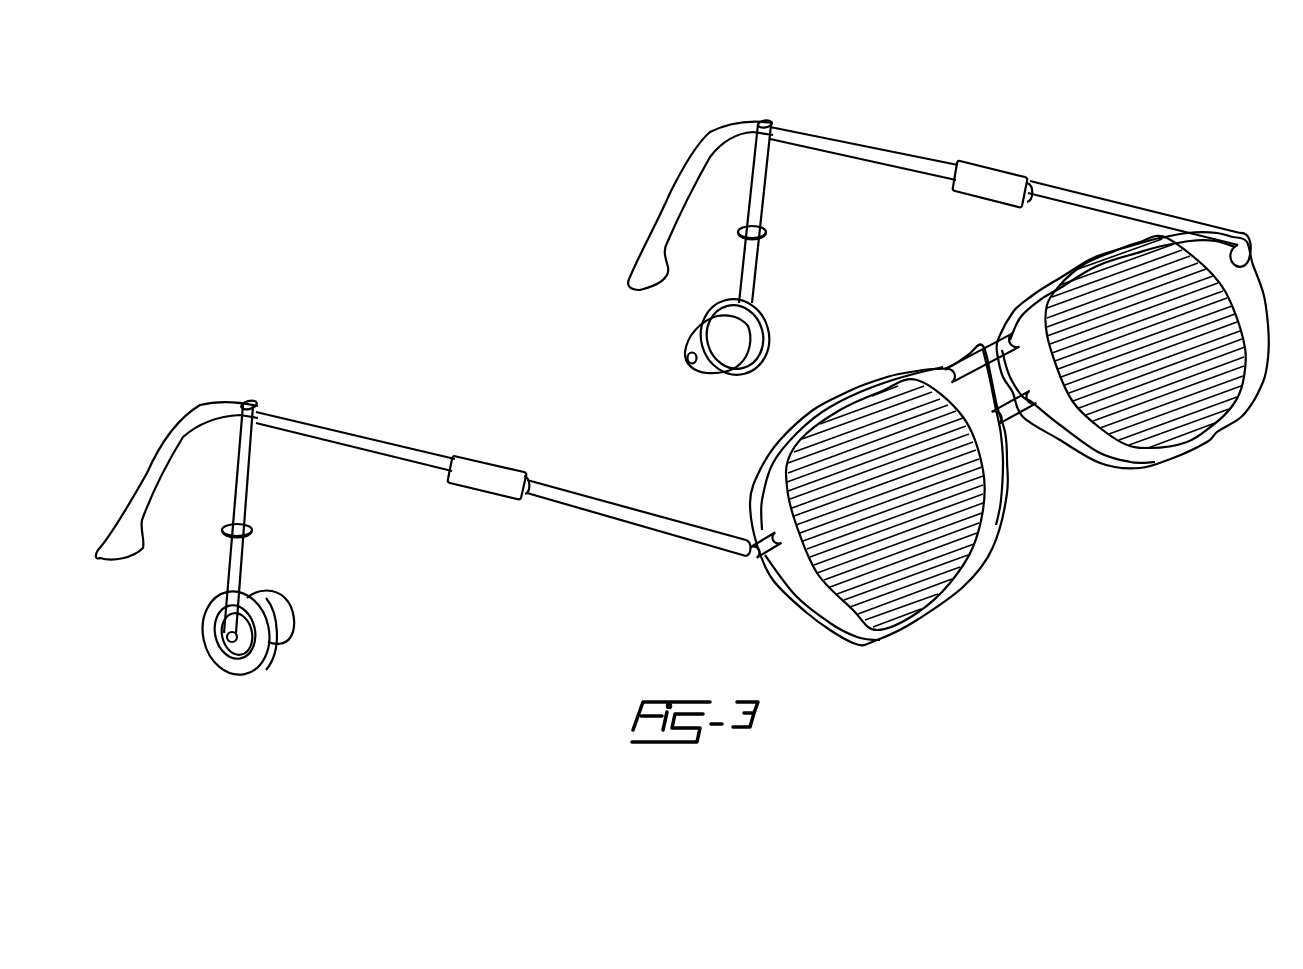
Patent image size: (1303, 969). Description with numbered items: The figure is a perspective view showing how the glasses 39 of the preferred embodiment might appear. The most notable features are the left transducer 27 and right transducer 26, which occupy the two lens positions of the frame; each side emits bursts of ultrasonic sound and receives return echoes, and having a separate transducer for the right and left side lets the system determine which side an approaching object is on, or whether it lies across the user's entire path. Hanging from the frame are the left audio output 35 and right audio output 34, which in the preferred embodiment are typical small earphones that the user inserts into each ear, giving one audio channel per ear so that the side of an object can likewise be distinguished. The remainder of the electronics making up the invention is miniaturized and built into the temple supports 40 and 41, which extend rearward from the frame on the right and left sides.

The glasses 39 is at (506, 247).
The temple support 40 is at (1000, 177).
The temple support 41 is at (480, 470).
The right audio output 34 is at (283, 618).
The left audio output 35 is at (763, 330).
The right transducer 26 is at (921, 582).
The left transducer 27 is at (1185, 415).